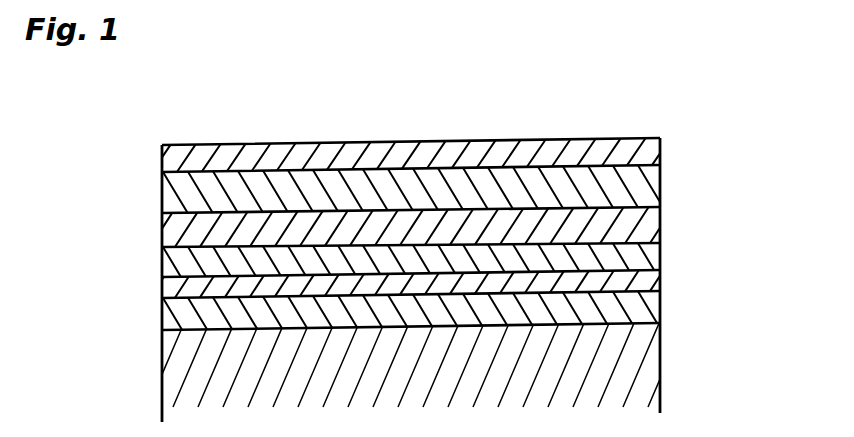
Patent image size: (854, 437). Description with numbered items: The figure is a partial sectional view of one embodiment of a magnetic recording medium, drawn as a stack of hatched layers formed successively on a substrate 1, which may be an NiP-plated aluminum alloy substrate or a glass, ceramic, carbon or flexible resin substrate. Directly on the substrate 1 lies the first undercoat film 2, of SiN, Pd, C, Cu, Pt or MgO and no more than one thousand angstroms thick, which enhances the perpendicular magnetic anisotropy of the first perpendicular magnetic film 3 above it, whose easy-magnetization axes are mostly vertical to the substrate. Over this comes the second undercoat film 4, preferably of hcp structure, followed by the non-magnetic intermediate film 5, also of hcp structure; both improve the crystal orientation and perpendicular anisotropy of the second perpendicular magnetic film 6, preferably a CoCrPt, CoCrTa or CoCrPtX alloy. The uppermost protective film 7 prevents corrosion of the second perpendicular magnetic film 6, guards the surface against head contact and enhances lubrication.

The substrate 1 is at (661, 333).
The first undercoat film 2 is at (661, 307).
The first perpendicular magnetic film 3 is at (661, 277).
The second undercoat film 4 is at (661, 253).
The non-magnetic intermediate film 5 is at (661, 222).
The second perpendicular magnetic film 6 is at (661, 183).
The protective film 7 is at (661, 150).